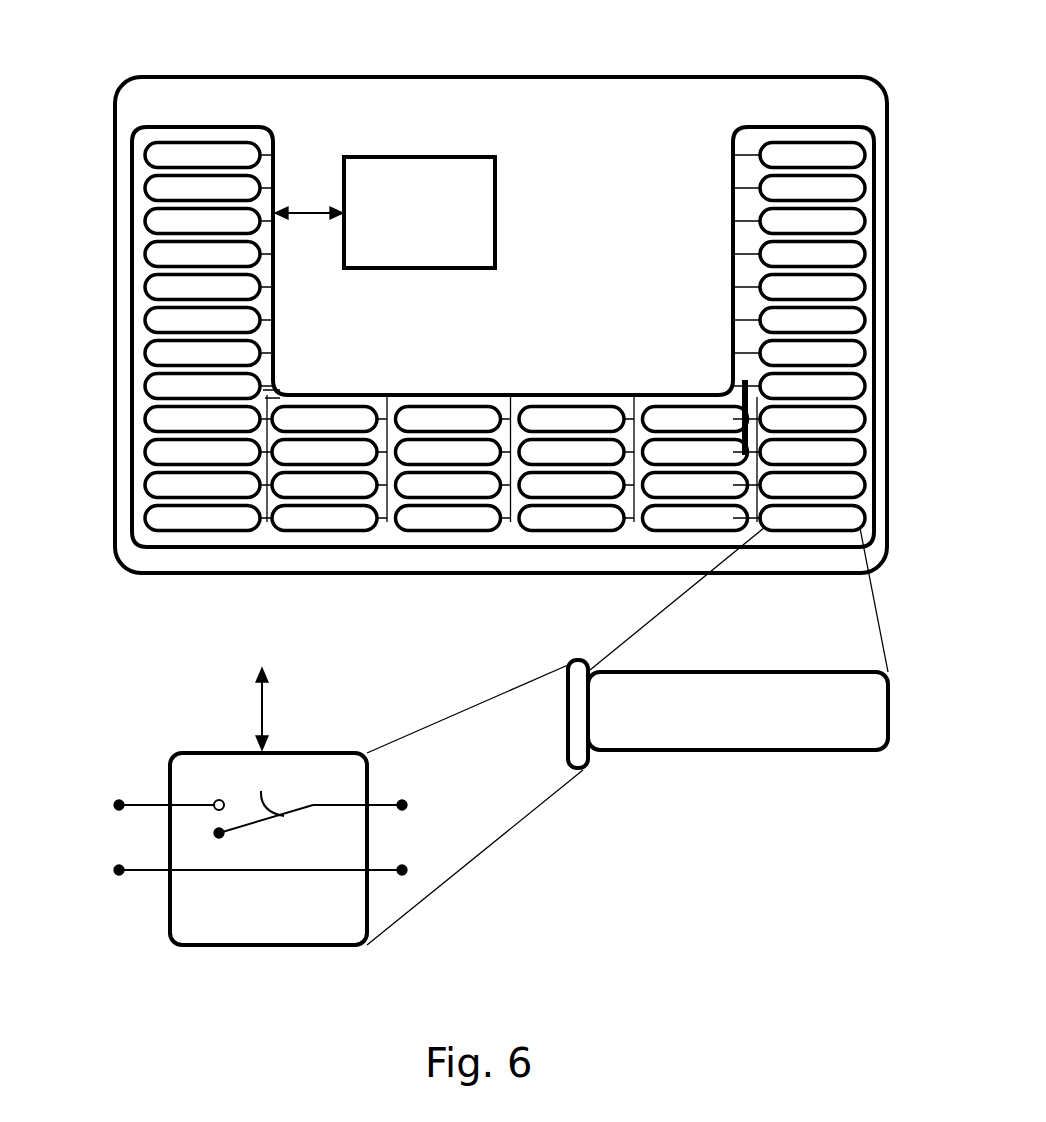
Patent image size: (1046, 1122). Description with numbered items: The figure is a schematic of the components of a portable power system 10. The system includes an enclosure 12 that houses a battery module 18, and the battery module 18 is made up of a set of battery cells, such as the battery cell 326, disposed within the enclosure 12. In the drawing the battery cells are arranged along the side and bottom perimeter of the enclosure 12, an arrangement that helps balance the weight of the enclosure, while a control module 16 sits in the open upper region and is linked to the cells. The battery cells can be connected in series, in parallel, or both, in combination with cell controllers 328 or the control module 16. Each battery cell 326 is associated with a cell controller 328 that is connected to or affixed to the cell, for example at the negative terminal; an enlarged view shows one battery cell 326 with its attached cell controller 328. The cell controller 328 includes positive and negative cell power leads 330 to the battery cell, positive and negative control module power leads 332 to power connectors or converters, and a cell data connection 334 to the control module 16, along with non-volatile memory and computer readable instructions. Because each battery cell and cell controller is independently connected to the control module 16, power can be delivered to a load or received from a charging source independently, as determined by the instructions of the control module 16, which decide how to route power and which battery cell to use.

The portable power system 10 is at (526, 30).
The enclosure 12 is at (887, 213).
The control module 16 is at (495, 183).
The battery module 18 is at (875, 298).
The battery cell 326 is at (762, 150).
The cell controller 328 is at (568, 665).
The cell power leads 330 is at (430, 834).
The control module power leads 332 is at (96, 841).
The cell data connection 334 is at (262, 712).